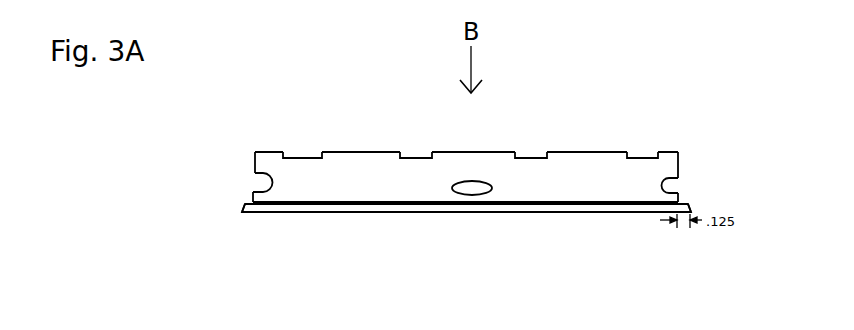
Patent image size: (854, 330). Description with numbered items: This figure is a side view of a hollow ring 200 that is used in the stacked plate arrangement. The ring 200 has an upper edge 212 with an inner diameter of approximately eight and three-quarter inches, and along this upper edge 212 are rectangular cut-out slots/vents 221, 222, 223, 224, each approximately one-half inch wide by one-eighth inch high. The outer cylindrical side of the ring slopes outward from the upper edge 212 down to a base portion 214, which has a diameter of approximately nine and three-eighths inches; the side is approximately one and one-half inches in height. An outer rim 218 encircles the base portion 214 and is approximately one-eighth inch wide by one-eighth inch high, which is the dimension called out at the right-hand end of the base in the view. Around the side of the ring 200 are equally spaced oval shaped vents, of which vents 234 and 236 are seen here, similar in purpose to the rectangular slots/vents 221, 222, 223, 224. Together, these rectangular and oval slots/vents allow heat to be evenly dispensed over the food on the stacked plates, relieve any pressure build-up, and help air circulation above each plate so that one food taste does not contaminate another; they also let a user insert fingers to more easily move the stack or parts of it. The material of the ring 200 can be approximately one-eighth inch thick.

The hollow ring 200 is at (190, 178).
The upper edge 212 is at (255, 152).
The base portion 214 is at (263, 213).
The outer rim 218 is at (244, 209).
The rectangular cut-out slot/vent 221 is at (302, 157).
The rectangular cut-out slot/vent 222 is at (418, 158).
The rectangular cut-out slot/vent 223 is at (533, 157).
The rectangular cut-out slot/vent 224 is at (647, 157).
The oval shaped vent 234 is at (492, 188).
The oval shaped vent 236 is at (681, 184).